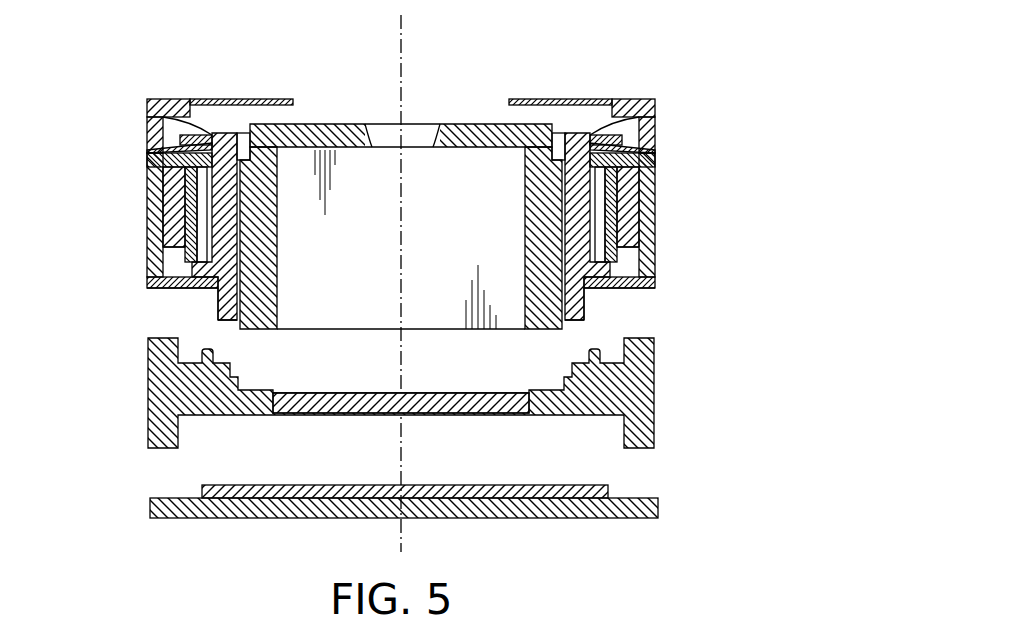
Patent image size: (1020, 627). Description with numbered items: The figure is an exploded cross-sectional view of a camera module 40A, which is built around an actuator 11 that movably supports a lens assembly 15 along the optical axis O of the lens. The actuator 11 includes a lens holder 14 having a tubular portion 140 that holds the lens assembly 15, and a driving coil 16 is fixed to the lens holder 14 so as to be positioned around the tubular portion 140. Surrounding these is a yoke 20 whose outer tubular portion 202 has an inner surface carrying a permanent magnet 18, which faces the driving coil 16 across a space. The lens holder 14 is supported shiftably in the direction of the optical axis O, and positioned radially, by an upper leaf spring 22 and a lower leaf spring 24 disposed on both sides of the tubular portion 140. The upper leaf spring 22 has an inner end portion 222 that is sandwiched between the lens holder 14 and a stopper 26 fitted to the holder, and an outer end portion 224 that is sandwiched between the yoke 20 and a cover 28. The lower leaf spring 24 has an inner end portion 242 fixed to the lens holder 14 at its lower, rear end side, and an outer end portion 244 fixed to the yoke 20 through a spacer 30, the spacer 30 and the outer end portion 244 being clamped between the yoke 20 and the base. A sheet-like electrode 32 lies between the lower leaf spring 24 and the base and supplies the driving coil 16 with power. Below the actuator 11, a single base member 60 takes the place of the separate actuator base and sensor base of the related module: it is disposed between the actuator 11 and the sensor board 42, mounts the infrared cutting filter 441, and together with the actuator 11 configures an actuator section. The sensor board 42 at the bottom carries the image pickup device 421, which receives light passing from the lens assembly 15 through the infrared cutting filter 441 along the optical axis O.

The optical axis O is at (405, 40).
The actuator 11 is at (743, 158).
The lens holder 14 is at (165, 168).
The lens assembly 15 is at (496, 124).
The driving coil 16 is at (165, 241).
The permanent magnet 18 is at (165, 217).
The yoke 20 is at (165, 191).
The upper leaf spring 22 is at (147, 117).
The lower leaf spring 24 is at (175, 290).
The stopper 26 is at (200, 135).
The cover 28 is at (165, 98).
The spacer 30 is at (160, 288).
The sheet-like electrode 32 is at (205, 288).
The camera module 40A is at (840, 44).
The sensor board 42 is at (633, 518).
The base member 60 is at (657, 388).
The tubular portion 140 is at (655, 278).
The outer tubular portion 202 is at (165, 266).
The inner end portion 222 is at (205, 143).
The outer end portion 224 is at (147, 142).
The inner end portion 242 is at (216, 282).
The outer end portion 244 is at (150, 293).
The image pickup device 421 is at (555, 487).
The infrared cutting filter 441 is at (308, 413).